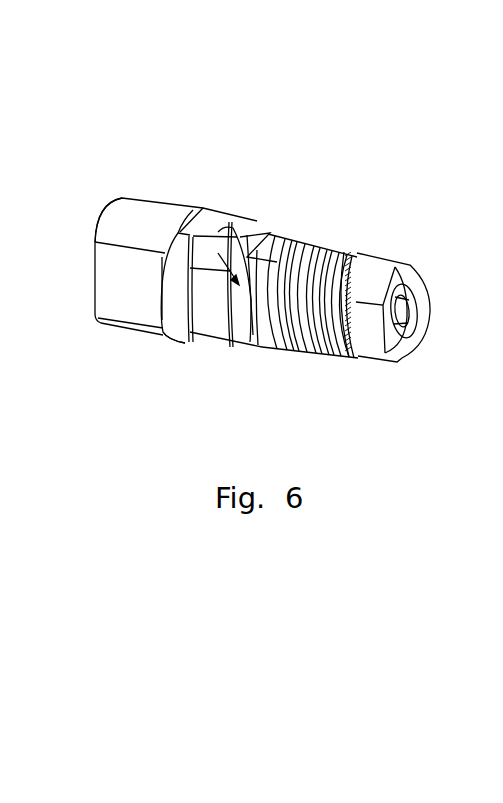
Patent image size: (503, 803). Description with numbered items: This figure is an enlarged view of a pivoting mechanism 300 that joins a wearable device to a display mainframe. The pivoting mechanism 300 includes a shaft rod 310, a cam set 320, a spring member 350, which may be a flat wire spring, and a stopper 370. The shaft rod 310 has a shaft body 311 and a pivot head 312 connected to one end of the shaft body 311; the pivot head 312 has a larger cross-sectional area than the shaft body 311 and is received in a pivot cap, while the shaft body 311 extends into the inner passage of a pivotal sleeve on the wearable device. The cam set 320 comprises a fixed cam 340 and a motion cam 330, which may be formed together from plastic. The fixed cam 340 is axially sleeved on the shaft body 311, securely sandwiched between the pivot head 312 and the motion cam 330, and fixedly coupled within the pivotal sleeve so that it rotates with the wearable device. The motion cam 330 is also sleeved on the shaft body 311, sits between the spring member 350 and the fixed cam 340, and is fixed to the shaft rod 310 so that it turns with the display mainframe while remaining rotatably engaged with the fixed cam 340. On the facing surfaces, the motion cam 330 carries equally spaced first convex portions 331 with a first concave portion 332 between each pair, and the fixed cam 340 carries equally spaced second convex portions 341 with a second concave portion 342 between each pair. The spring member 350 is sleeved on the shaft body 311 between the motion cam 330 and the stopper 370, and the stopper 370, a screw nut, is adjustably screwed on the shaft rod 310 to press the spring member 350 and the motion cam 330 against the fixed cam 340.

The pivoting mechanism 300 is at (98, 100).
The shaft rod 310 is at (149, 197).
The shaft body 311 is at (413, 313).
The pivot head 312 is at (125, 210).
The cam set 320 is at (307, 148).
The motion cam 330 is at (266, 232).
The first convex portion 331 is at (226, 323).
The first concave portion 332 is at (245, 347).
The fixed cam 340 is at (212, 213).
The second convex portion 341 is at (248, 342).
The second concave portion 342 is at (227, 346).
The spring member 350 is at (334, 243).
The stopper 370 is at (391, 265).